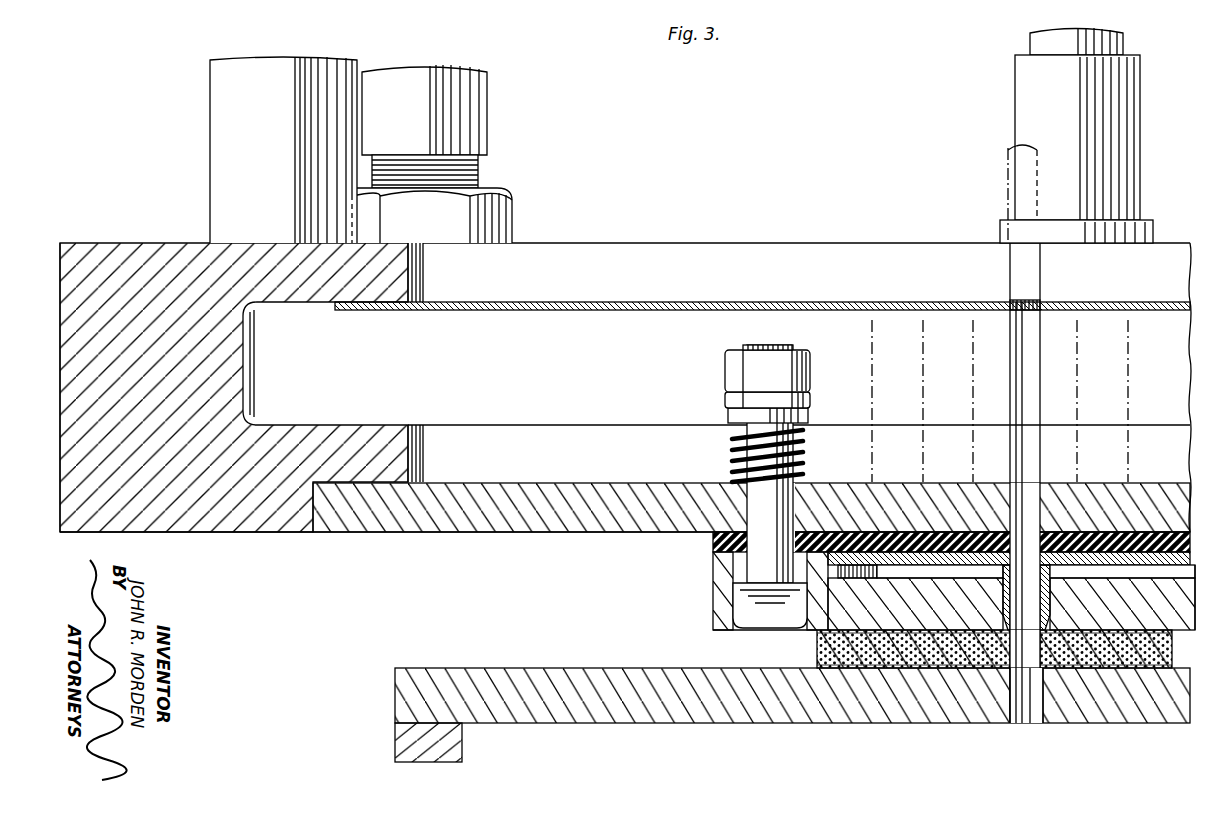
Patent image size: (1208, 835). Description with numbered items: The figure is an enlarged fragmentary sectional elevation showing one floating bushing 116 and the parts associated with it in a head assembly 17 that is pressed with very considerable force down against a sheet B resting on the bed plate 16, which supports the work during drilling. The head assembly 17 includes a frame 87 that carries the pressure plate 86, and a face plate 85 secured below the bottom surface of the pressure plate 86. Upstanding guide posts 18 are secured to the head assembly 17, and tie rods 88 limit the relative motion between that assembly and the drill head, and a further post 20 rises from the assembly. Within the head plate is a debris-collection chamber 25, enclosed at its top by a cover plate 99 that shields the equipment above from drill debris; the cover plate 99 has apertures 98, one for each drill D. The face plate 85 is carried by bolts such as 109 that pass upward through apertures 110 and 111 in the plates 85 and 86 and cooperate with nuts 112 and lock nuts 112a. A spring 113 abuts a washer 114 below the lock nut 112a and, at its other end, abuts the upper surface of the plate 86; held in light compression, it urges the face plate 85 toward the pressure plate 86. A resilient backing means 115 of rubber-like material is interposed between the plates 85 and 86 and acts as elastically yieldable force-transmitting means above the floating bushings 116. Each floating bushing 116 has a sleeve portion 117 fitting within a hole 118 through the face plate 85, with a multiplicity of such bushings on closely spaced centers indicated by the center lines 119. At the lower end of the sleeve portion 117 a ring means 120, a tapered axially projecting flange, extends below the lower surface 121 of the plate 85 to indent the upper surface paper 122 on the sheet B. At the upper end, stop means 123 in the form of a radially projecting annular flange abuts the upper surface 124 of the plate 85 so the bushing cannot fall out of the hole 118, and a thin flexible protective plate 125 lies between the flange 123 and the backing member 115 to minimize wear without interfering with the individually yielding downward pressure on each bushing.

The bed plate 16 is at (780, 723).
The head plate assembly 17 is at (170, 236).
The guide post 18 is at (210, 92).
The post 20 is at (1040, 40).
The chamber 25 is at (352, 374).
The face plate 85 is at (713, 600).
The pressure plate 86 is at (572, 532).
The frame 87 is at (96, 243).
The tie rod 88 is at (480, 105).
The aperture 98 is at (1028, 302).
The cover plate 99 is at (660, 302).
The bolt 109 is at (750, 554).
The aperture 110 is at (750, 571).
The aperture 111 is at (750, 497).
The nut 112 is at (730, 365).
The lock nut 112a is at (728, 399).
The spring 113 is at (730, 437).
The washer 114 is at (728, 413).
The resilient backing means 115 is at (892, 515).
The floating bushing 116 is at (993, 570).
The sleeve portion 117 is at (1003, 575).
The hole 118 is at (1060, 612).
The center line 119 is at (1077, 359).
The ring means 120 is at (1022, 723).
The lower surface 121 is at (1198, 632).
The upper surface paper 122 is at (1192, 580).
The stop means 123 is at (1000, 600).
The upper surface 124 is at (982, 515).
The protective plate 125 is at (942, 515).
The sheet B is at (817, 649).
The drill D is at (1005, 180).